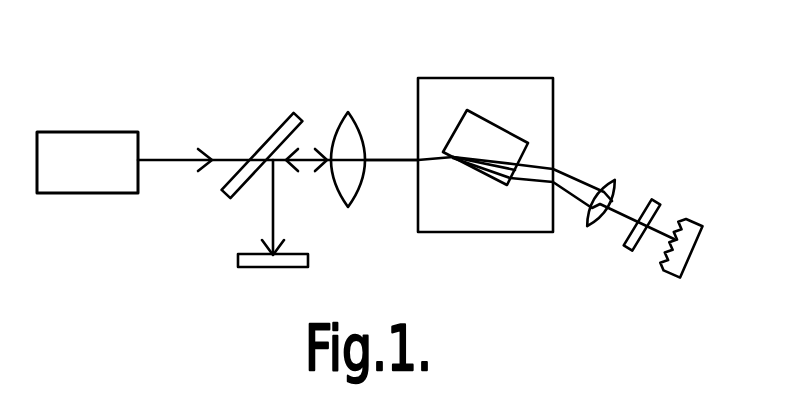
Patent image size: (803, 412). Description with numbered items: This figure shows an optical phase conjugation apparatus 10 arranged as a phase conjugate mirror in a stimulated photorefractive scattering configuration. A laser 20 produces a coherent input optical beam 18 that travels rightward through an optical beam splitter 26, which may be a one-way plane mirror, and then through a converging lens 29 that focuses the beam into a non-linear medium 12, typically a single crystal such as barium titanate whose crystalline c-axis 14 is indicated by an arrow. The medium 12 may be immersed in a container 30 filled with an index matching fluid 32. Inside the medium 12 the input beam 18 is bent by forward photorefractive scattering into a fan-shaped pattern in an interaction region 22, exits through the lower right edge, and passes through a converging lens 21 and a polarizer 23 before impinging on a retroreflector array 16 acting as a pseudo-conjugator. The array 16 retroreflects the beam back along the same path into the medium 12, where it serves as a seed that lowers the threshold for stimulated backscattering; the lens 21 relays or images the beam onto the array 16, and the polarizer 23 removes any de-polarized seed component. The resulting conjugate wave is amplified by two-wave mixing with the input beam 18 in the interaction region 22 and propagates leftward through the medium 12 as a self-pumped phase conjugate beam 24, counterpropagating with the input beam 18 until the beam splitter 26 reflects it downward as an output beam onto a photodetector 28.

The optical phase conjugation apparatus 10 is at (222, 99).
The non-linear medium 12 is at (505, 130).
The crystalline c-axis 14 is at (398, 100).
The retroreflector array 16 is at (668, 270).
The input optical beam 18 is at (172, 159).
The laser 20 is at (80, 131).
The converging lens 21 is at (608, 178).
The interaction region 22 is at (517, 188).
The polarizer 23 is at (660, 198).
The self-pumped phase conjugate beam 24 is at (272, 212).
The optical beam splitter 26 is at (291, 118).
The photodetector 28 is at (238, 259).
The converging lens 29 is at (338, 195).
The container 30 is at (478, 78).
The index matching fluid 32 is at (519, 86).